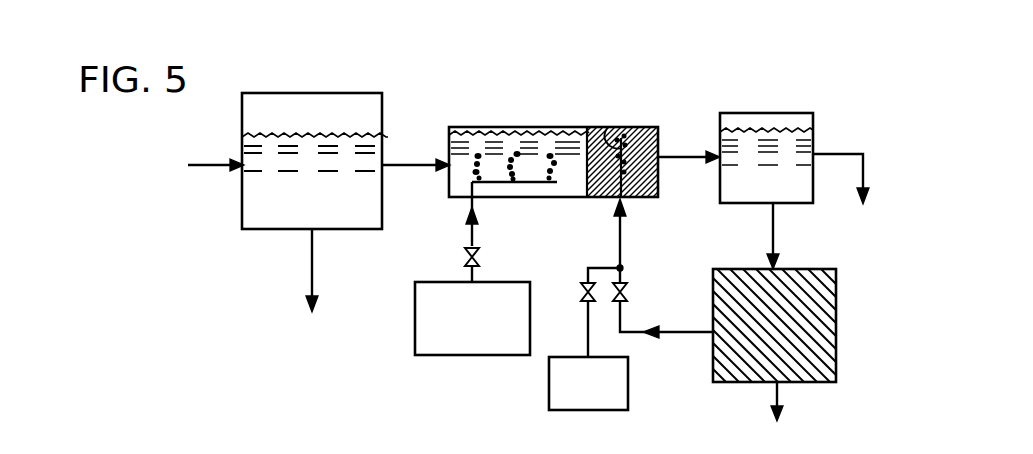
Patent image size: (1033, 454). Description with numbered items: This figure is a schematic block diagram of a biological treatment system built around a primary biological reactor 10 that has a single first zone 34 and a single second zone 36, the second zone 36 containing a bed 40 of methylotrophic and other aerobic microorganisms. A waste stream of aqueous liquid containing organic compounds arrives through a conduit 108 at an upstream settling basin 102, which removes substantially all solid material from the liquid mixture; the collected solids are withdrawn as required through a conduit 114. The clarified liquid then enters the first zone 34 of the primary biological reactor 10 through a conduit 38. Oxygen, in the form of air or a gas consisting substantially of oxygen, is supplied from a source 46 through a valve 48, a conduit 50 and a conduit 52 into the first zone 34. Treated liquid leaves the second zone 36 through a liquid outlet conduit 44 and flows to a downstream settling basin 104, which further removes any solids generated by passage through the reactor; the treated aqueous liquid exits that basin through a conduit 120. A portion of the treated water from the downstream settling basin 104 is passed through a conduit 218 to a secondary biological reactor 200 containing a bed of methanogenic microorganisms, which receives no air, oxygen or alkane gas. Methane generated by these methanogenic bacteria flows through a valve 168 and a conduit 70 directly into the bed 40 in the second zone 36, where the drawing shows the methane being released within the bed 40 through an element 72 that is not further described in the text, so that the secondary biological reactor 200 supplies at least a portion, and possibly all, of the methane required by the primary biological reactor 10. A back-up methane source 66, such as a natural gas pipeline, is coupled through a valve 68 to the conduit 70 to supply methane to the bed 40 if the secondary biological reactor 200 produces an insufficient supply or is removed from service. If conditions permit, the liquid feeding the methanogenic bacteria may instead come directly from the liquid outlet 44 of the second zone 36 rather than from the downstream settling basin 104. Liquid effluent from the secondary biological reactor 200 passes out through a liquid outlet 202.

The primary biological reactor 10 is at (478, 116).
The first zone 34 is at (512, 127).
The second zone 36 is at (590, 127).
The conduit 38 is at (402, 160).
The bed 40 is at (642, 127).
The conduit 44 is at (680, 160).
The source 46 is at (455, 355).
The valve 48 is at (480, 258).
The conduit 50 is at (466, 230).
The conduit 52 is at (528, 183).
The back-up methane source 66 is at (548, 390).
The valve 68 is at (580, 290).
The conduit 70 is at (615, 254).
The methane sparger 72 is at (608, 127).
The upstream settling basin 102 is at (328, 93).
The downstream settling basin 104 is at (766, 113).
The conduit 108 is at (202, 166).
The conduit 114 is at (313, 244).
The conduit 120 is at (838, 152).
The valve 168 is at (630, 290).
The secondary biological reactor 200 is at (710, 350).
The liquid outlet 202 is at (780, 392).
The conduit 218 is at (774, 224).